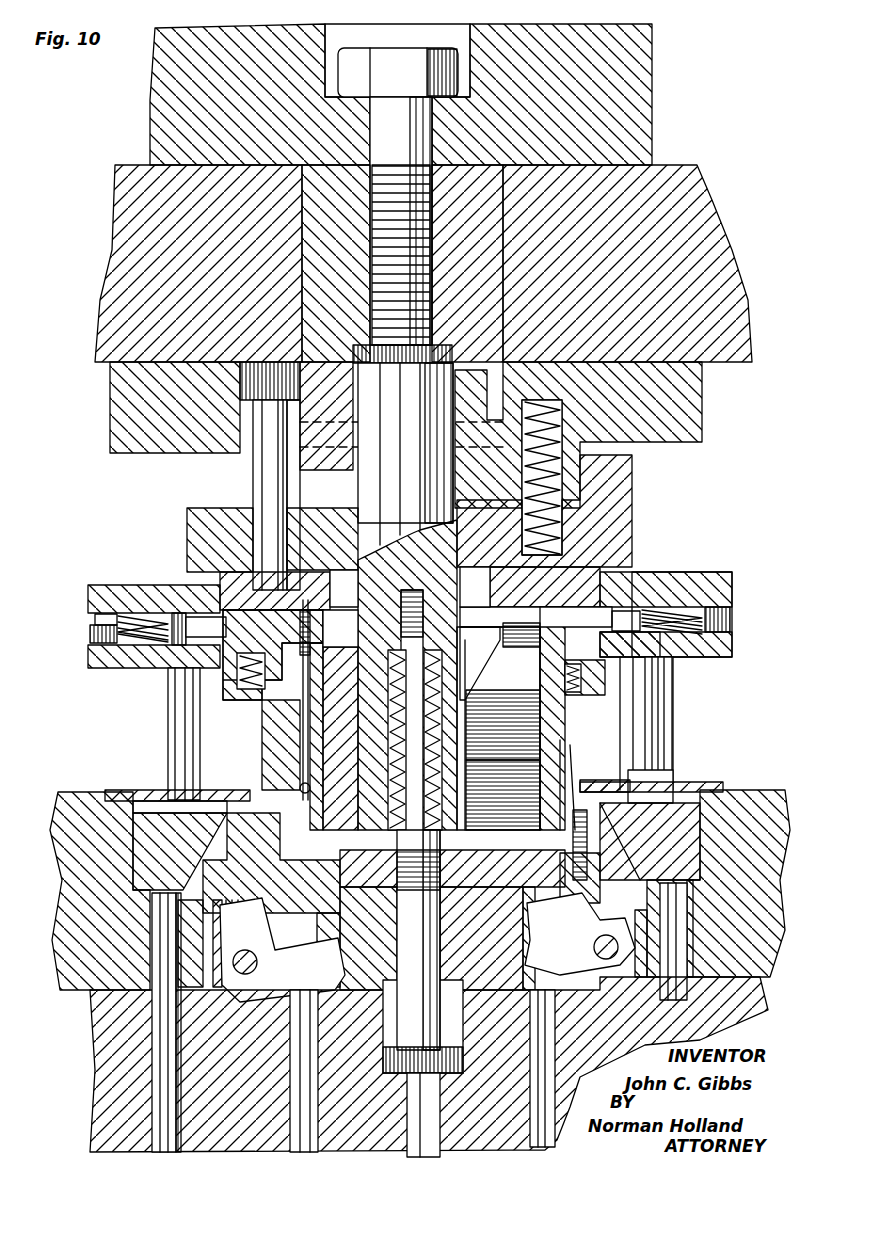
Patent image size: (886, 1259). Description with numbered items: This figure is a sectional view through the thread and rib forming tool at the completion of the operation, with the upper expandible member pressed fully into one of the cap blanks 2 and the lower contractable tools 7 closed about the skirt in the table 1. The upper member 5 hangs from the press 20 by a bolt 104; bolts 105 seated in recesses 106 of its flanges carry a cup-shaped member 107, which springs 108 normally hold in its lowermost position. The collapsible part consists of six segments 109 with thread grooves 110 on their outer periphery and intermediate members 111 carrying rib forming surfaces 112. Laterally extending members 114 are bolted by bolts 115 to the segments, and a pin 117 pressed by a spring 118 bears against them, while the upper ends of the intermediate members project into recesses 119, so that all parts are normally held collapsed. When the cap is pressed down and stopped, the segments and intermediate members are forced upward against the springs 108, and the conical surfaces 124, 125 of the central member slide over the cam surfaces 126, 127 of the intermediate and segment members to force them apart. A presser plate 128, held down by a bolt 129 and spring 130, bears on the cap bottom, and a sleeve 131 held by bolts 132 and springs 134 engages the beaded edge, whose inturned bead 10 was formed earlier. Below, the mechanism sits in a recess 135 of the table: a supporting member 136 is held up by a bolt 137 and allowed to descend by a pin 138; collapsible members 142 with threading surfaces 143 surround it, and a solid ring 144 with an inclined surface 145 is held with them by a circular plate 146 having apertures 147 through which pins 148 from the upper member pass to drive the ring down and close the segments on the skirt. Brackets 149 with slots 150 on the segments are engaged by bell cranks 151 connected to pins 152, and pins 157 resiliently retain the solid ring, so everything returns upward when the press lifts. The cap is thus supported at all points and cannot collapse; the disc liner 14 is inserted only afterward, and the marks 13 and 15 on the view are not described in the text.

The bolt 104 is at (398, 103).
The press 20 is at (630, 72).
The inturned bead 10 is at (680, 392).
The recesses 106 is at (240, 445).
The bolts 105 is at (258, 462).
The cup-shaped member 107 is at (612, 520).
The springs 108 is at (568, 462).
The thread and rib forming tool 5 is at (152, 558).
The springs 134 is at (250, 690).
The bolts 115 is at (295, 725).
The segments 109 is at (300, 742).
The thread grooves 110 is at (298, 782).
The bolts 132 is at (625, 535).
The recesses 119 is at (630, 565).
The laterally extending members 114 is at (640, 580).
The pin 117 is at (690, 598).
The spring 118 is at (718, 600).
The bolt 129 is at (398, 600).
The spring 130 is at (385, 652).
The cam surface 126 is at (475, 645).
The conical surface 124 is at (478, 710).
The intermediate members 111 is at (498, 726).
The cam surface 127 is at (503, 728).
The conical surface 125 is at (470, 812).
The sleeve 131 is at (560, 712).
The pins 148 is at (170, 696).
The collapsible members 142 is at (668, 740).
The apertures 147 is at (682, 770).
The circular plate 146 is at (700, 780).
The inclined surface 145 is at (712, 780).
The threading surfaces 143 is at (205, 786).
The cap blanks 2 is at (560, 775).
The rib forming surfaces 112 is at (585, 780).
The tools 7 is at (76, 772).
The table 1 is at (770, 790).
The brackets 149 is at (133, 880).
The solid ring 144 is at (700, 850).
The recess 135 is at (770, 900).
The section line 13 is at (60, 824).
The disc liner 14 is at (70, 960).
The presser plate 128 is at (310, 895).
The slots 150 is at (262, 905).
The bell cranks 151 is at (259, 962).
The supporting member 136 is at (535, 905).
The lower die shoe 15 is at (735, 992).
The pins 152 is at (150, 1050).
The pins 157 is at (158, 1085).
The bolt 137 is at (376, 993).
The pin 138 is at (440, 1130).